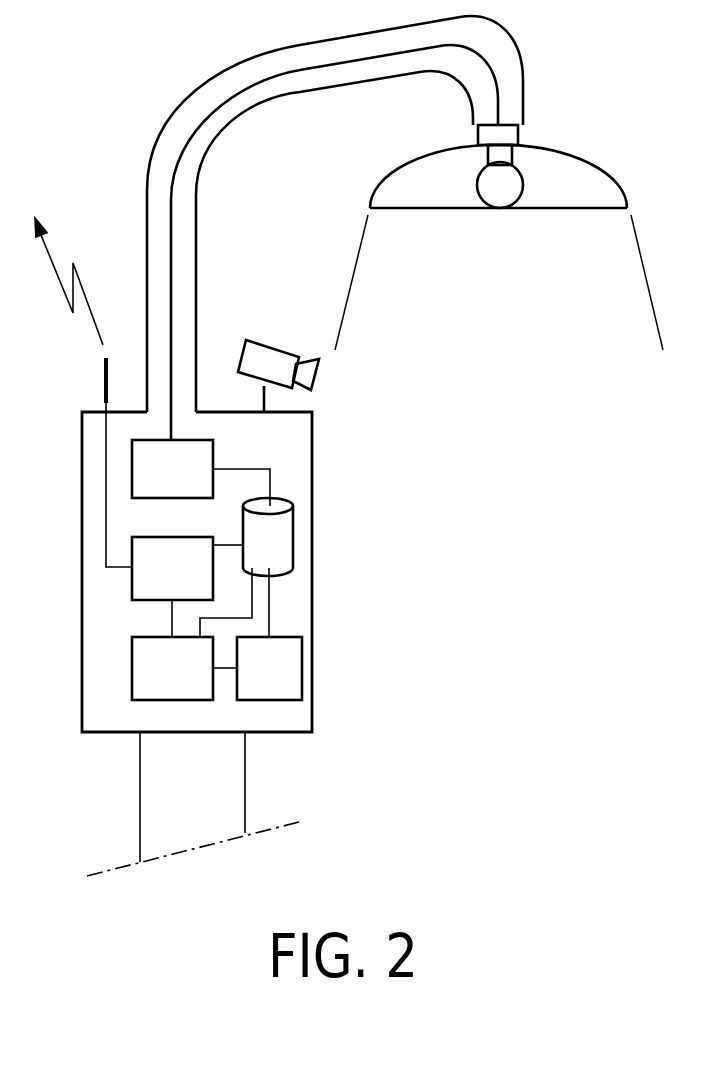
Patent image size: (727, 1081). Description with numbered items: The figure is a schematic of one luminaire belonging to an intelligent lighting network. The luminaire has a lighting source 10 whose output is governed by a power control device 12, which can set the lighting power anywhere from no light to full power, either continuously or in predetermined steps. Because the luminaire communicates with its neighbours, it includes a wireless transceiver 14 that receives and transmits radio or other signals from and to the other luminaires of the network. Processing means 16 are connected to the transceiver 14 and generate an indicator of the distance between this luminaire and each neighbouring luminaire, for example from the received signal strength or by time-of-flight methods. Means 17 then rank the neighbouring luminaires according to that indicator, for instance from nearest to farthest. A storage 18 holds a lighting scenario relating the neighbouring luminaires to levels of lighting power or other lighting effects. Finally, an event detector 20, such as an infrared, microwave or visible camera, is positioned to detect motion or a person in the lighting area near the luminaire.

The lighting source 10 is at (503, 200).
The power control device 12 is at (158, 484).
The wireless transceiver 14 is at (158, 584).
The processing means 16 is at (158, 684).
The means for ranking 17 is at (255, 684).
The storage 18 is at (254, 552).
The event detector 20 is at (272, 345).